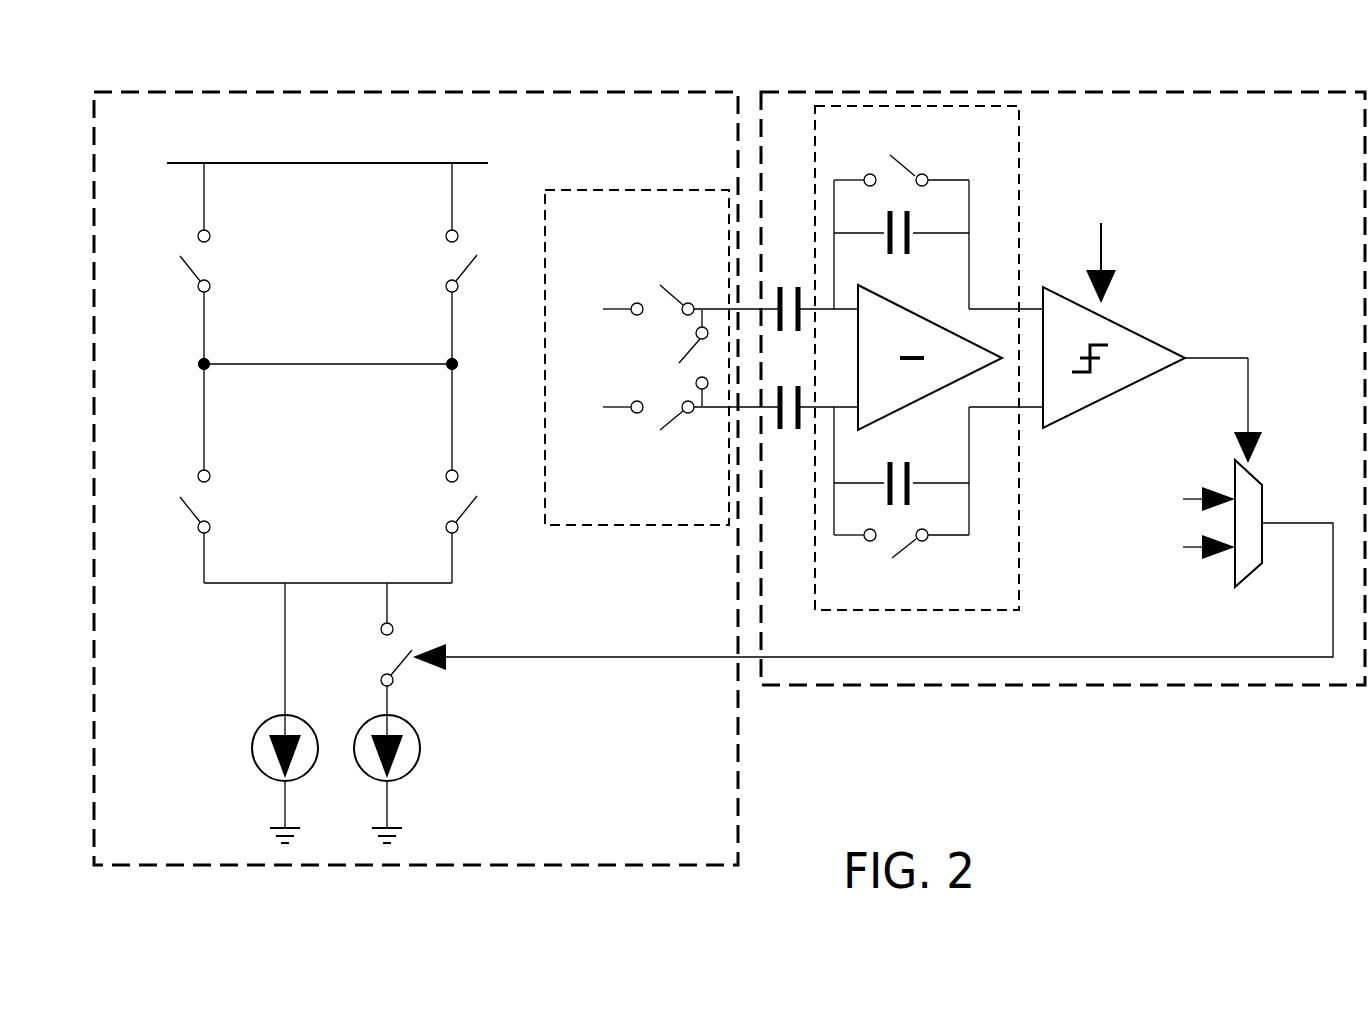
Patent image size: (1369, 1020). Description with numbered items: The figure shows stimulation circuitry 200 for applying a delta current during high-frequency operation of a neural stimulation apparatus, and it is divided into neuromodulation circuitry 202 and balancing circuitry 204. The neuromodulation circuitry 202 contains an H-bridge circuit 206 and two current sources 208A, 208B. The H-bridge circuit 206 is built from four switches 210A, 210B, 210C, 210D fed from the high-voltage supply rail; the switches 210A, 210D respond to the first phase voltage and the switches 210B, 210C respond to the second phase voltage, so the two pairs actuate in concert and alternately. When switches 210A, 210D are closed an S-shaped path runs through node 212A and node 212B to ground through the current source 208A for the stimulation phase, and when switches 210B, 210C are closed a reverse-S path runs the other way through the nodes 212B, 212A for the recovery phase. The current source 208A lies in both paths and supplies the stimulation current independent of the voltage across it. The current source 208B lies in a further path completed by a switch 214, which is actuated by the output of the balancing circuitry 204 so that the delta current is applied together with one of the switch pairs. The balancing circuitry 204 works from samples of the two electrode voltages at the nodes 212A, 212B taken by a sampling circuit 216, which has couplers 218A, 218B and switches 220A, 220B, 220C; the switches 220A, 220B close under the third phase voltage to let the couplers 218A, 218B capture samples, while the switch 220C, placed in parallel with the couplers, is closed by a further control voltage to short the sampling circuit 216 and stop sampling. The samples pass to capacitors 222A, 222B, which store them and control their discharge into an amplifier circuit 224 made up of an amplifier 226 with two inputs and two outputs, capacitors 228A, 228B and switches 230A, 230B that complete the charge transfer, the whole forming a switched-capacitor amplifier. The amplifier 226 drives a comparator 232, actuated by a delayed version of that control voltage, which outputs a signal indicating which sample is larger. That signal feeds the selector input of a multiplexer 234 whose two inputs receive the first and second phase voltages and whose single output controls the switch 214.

The stimulation circuitry 200 is at (108, 70).
The neuromodulation circuitry 202 is at (416, 501).
The balancing circuitry 204 is at (1063, 411).
The H-bridge circuit 206 is at (122, 362).
The current source 208A is at (266, 720).
The current source 208B is at (413, 723).
The switch 210A is at (233, 254).
The switch 210B is at (425, 265).
The switch 210C is at (233, 494).
The switch 210D is at (425, 506).
The node 212A is at (208, 370).
The node 212B is at (448, 368).
The switch 214 is at (425, 630).
The sampling circuit 216 is at (572, 190).
The coupler 218A is at (618, 303).
The coupler 218B is at (615, 418).
The switch 220A is at (660, 283).
The switch 220B is at (672, 428).
The switch 220C is at (692, 348).
The capacitor 222A is at (787, 270).
The capacitor 222B is at (790, 460).
The amplifier circuit 224 is at (1019, 142).
The amplifier 226 is at (942, 325).
The capacitor 228A is at (920, 232).
The capacitor 228B is at (922, 483).
The switch 230A is at (873, 150).
The switch 230B is at (870, 560).
The comparator 232 is at (1148, 333).
The multiplexer 234 is at (1265, 500).